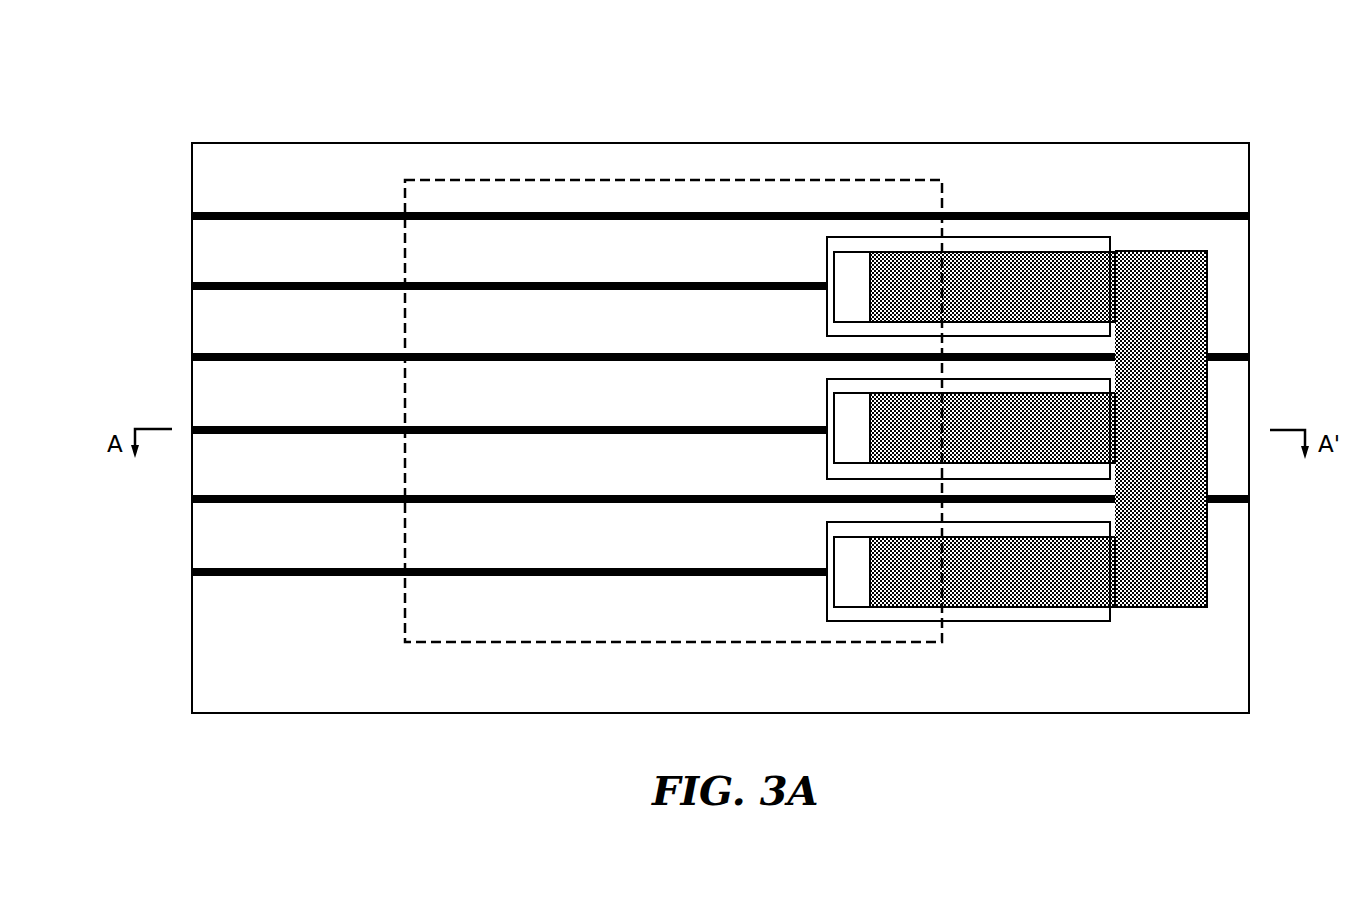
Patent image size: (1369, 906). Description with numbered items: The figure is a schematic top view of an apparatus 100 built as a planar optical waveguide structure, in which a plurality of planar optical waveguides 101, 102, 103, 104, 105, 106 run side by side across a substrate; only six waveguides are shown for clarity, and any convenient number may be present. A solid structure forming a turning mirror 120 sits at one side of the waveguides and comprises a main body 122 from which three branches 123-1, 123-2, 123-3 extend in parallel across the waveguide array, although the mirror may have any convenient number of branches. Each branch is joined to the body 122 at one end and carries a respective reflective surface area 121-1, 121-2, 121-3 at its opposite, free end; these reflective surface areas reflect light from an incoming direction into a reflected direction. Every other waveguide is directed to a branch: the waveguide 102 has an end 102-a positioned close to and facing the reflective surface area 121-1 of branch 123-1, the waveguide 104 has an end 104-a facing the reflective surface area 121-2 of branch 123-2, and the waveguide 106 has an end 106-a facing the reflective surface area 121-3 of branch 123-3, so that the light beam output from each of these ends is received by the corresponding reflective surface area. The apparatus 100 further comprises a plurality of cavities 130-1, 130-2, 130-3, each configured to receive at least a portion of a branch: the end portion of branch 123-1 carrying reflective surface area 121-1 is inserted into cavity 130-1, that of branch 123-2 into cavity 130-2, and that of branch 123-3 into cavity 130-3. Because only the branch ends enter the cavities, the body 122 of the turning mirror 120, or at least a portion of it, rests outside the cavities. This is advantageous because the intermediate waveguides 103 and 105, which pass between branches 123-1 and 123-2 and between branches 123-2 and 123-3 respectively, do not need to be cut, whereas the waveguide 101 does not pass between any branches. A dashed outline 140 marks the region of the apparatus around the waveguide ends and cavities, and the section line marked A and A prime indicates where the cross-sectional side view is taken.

The apparatus 100 is at (1085, 108).
The planar optical waveguide 101 is at (226, 213).
The planar optical waveguide 102 is at (226, 283).
The intermediate waveguide 103 is at (226, 354).
The planar optical waveguide 104 is at (226, 427).
The intermediate waveguide 105 is at (226, 503).
The planar optical waveguide 106 is at (226, 576).
The end of waveguide 102-a is at (823, 291).
The end of waveguide 104-a is at (823, 435).
The end of waveguide 106-a is at (823, 577).
The turning mirror 120 is at (1105, 433).
The reflective surface area 121-1 is at (845, 305).
The reflective surface area 121-2 is at (845, 447).
The reflective surface area 121-3 is at (845, 589).
The main body 122 is at (1157, 420).
The branch 123-1 is at (1028, 265).
The branch 123-2 is at (1098, 445).
The branch 123-3 is at (1025, 593).
The cavity 130-1 is at (827, 240).
The cavity 130-2 is at (827, 383).
The cavity 130-3 is at (827, 524).
The test region 140 is at (405, 180).